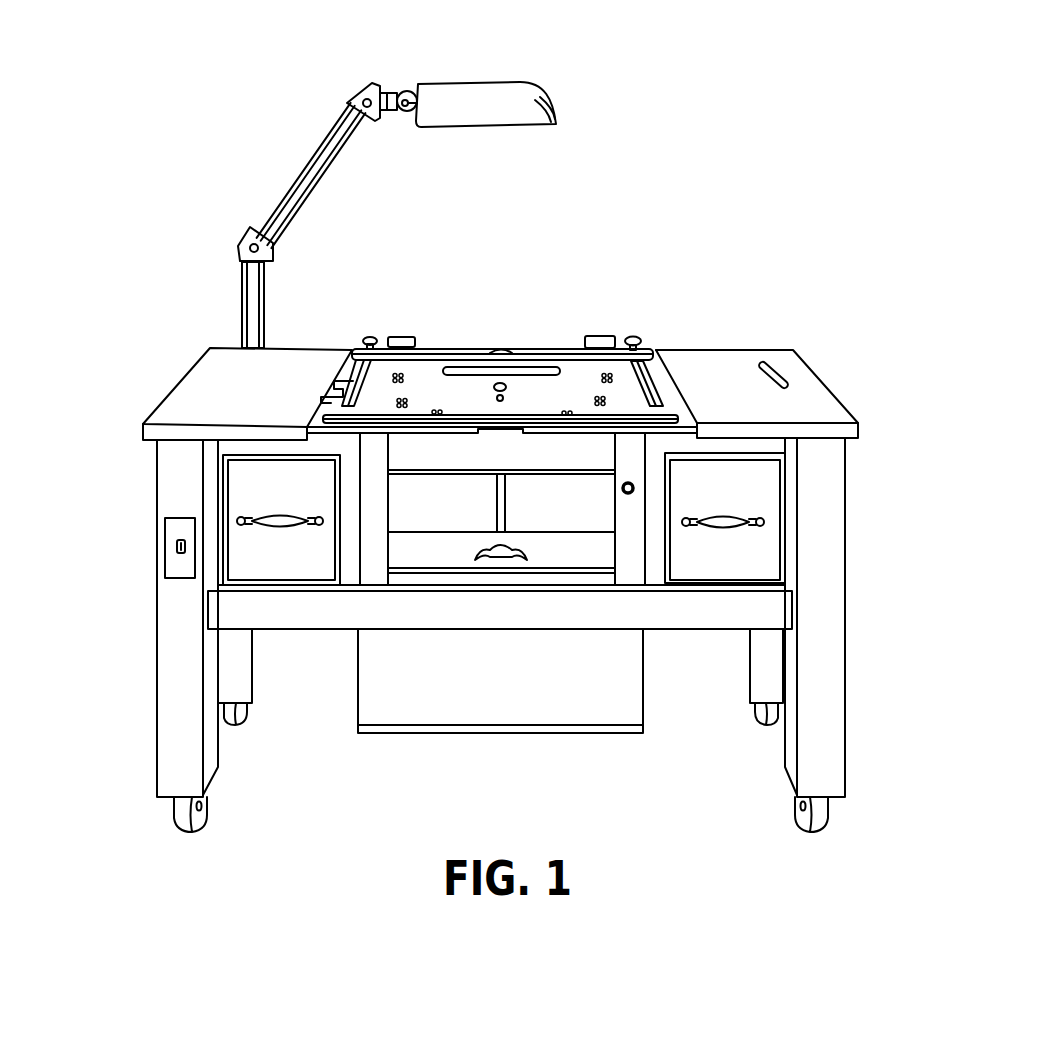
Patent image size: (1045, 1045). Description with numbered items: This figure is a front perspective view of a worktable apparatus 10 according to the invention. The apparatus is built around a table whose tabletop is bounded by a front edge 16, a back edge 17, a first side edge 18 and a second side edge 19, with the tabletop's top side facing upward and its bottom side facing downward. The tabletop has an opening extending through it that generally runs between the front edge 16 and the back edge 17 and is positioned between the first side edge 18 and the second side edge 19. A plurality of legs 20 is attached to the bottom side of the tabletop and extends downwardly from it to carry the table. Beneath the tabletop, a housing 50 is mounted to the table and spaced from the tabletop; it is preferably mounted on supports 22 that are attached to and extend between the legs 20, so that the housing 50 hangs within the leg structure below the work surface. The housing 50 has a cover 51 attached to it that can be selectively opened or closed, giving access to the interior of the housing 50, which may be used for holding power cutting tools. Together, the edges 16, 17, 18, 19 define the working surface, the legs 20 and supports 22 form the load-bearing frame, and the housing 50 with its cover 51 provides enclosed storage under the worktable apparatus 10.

The worktable apparatus 10 is at (182, 77).
The front edge 16 is at (805, 430).
The back edge 17 is at (728, 350).
The first side edge 18 is at (824, 380).
The second side edge 19 is at (182, 389).
The legs 20 is at (845, 638).
The supports 22 is at (313, 610).
The housing 50 is at (643, 715).
The cover 51 is at (558, 553).